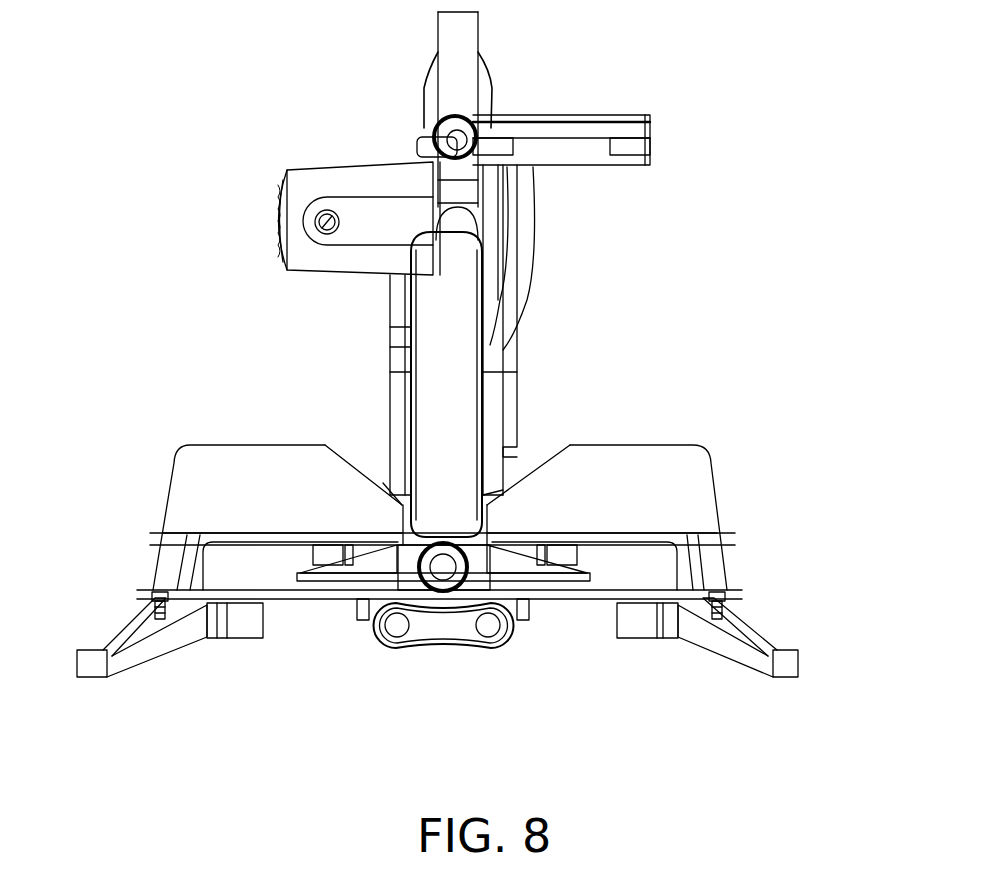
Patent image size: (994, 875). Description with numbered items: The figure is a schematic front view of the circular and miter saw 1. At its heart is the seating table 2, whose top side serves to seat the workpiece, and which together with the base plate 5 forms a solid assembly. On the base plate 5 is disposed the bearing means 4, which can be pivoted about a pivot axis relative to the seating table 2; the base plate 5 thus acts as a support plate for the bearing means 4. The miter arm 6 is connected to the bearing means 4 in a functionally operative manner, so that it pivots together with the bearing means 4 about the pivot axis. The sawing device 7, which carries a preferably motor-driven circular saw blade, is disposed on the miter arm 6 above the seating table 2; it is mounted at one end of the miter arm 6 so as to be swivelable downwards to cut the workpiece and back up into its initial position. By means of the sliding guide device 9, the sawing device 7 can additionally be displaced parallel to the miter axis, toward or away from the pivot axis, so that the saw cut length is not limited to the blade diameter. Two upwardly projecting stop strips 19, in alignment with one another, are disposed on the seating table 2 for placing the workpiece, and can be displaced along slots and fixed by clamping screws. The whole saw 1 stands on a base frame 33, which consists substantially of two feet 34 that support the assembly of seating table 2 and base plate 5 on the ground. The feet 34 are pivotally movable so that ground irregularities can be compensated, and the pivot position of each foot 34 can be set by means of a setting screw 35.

The circular and miter saw 1 is at (160, 361).
The seating table 2 is at (688, 548).
The bearing means 4 is at (523, 567).
The base plate 5 is at (568, 598).
The miter arm 6 is at (503, 348).
The sawing device 7 is at (458, 410).
The sliding guide device 9 is at (372, 660).
The stop strips 19 is at (203, 473).
The base frame 33 is at (173, 637).
The feet 34 is at (713, 637).
The setting screw 35 is at (150, 600).